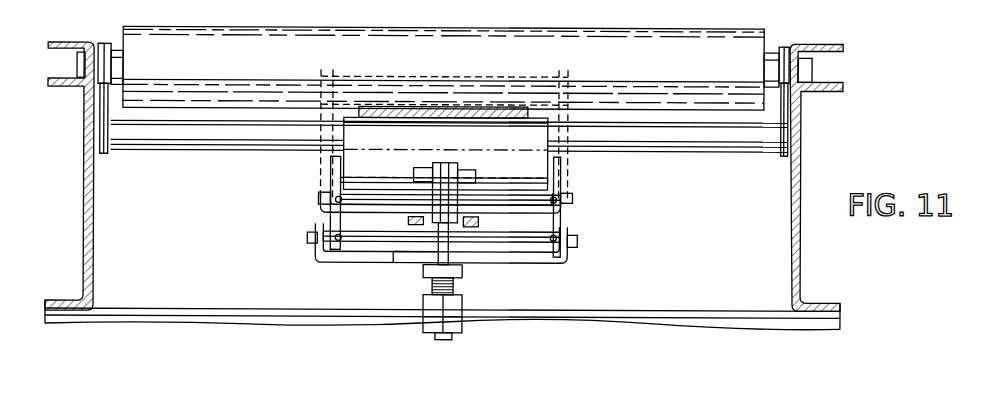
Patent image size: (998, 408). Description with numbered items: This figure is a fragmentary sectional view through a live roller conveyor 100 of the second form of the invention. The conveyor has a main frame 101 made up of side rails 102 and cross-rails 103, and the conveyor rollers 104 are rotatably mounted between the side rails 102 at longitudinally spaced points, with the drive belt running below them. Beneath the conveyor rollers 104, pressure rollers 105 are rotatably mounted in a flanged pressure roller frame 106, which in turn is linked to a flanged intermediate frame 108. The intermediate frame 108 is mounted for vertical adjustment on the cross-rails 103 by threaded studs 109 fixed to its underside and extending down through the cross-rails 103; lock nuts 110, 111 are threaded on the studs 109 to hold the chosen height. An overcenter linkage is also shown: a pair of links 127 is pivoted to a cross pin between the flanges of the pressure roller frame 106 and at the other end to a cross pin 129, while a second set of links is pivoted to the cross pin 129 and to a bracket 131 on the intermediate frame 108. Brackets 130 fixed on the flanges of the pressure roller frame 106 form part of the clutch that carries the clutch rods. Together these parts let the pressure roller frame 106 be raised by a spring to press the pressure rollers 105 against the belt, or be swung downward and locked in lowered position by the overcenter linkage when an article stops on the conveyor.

The live roller conveyor 100 is at (810, 144).
The main frame 101 is at (806, 178).
The side rails 102 is at (83, 242).
The cross-rails 103 is at (218, 308).
The conveyor rollers 104 is at (230, 40).
The pressure rollers 105 is at (348, 129).
The pressure roller frame 106 is at (570, 180).
The intermediate frame 108 is at (567, 258).
The threaded studs 109 is at (433, 336).
The lock nut 110 is at (462, 301).
The lock nut 111 is at (457, 330).
The links 127 is at (443, 161).
The cross pin 129 is at (467, 170).
The brackets 130 is at (432, 165).
The bracket 131 is at (412, 254).